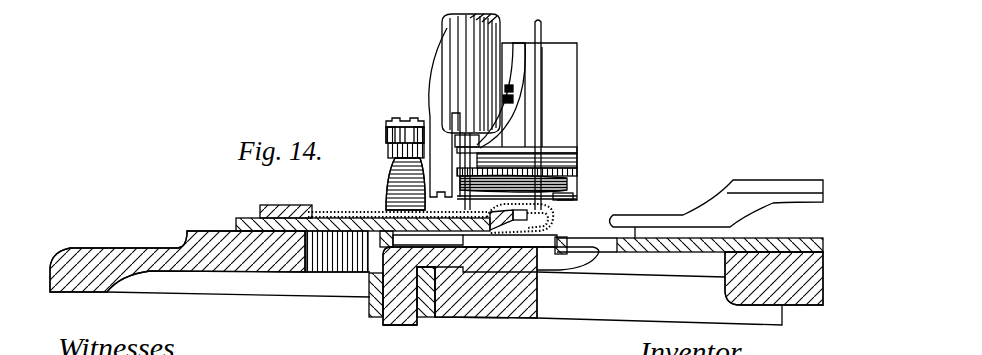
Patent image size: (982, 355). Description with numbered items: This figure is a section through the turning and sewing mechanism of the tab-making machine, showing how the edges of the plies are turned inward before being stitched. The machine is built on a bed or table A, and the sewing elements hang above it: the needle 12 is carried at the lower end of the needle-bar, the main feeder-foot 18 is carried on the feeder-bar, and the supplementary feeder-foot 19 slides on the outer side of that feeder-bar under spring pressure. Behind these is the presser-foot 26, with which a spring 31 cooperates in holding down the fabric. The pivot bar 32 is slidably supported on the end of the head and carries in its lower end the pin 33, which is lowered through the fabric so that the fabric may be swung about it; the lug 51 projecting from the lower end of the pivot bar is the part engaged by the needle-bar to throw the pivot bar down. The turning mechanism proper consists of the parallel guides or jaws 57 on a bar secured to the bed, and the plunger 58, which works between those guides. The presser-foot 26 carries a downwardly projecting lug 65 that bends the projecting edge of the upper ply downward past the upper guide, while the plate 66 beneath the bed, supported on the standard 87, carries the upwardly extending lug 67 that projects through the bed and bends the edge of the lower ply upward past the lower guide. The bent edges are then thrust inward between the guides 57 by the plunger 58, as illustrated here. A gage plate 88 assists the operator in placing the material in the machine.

The bed or table A is at (118, 250).
The needle 12 is at (541, 28).
The feeder-foot 18 is at (541, 133).
The supplementary feeder-foot 19 is at (431, 93).
The presser-foot 26 is at (573, 163).
The spring 31 is at (387, 170).
The bar 32 is at (448, 23).
The pin 33 is at (397, 198).
The lug 51 is at (505, 53).
The guides or jaws 57 is at (567, 219).
The plunger 58 is at (717, 209).
The lug 65 is at (568, 197).
The presser-foot or plate 66 is at (562, 267).
The lug 67 is at (563, 240).
The standard 87 is at (397, 318).
The gage plate 88 is at (279, 208).